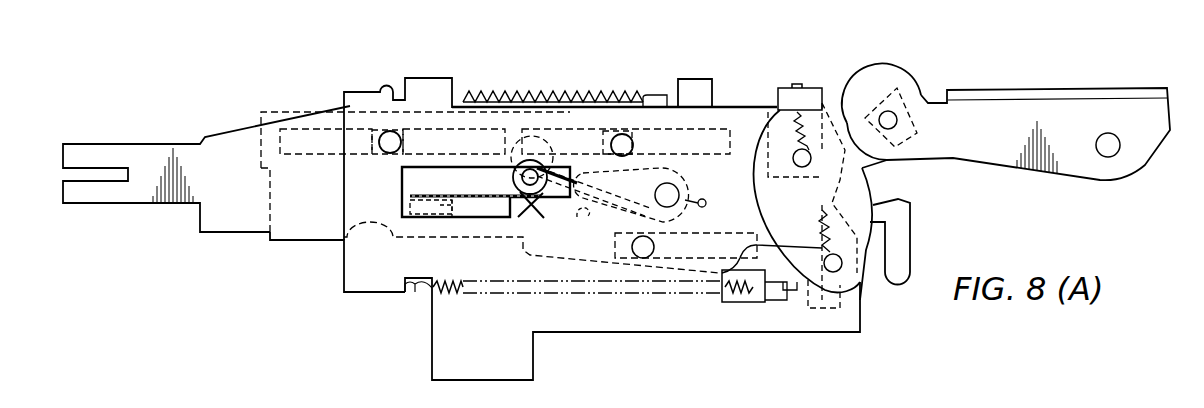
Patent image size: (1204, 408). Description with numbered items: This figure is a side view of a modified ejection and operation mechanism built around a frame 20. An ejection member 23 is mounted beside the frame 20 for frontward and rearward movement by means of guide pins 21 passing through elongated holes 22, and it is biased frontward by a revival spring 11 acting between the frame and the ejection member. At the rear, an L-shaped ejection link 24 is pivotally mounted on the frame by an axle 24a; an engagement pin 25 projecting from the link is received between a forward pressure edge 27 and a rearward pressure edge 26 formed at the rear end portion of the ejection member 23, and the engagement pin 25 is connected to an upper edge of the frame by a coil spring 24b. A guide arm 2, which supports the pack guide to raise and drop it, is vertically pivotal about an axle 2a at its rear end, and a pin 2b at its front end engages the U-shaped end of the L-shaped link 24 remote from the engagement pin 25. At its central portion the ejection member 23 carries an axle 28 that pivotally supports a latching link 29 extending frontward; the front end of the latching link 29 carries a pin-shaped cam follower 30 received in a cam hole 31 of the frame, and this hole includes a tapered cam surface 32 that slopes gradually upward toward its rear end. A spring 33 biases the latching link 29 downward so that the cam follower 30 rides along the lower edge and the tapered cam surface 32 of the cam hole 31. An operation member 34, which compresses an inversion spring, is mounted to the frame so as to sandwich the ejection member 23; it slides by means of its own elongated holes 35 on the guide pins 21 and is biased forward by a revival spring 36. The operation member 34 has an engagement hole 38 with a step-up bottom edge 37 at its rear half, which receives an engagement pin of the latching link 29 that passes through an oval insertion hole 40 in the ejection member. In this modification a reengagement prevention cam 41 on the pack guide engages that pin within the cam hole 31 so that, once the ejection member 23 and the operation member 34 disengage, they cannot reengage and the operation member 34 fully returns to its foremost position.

The guide arm 2 is at (1038, 110).
The axle 2a is at (1110, 155).
The pin 2b is at (893, 119).
The revival spring 11 is at (487, 288).
The frame 20 is at (585, 318).
The guide pins 21 is at (383, 136).
The elongated holes 22 is at (458, 137).
The ejection member 23 is at (113, 152).
The L-shaped ejection link 24 is at (857, 208).
The axle 24a is at (810, 152).
The coil spring 24b is at (779, 108).
The engagement pin 25 is at (843, 268).
The rearward pressure edge 26 is at (807, 282).
The forward pressure edge 27 is at (903, 250).
The axle 28 is at (672, 197).
The latching link 29 is at (587, 213).
The cam follower 30 is at (531, 170).
The cam hole 31 is at (405, 192).
The tapered cam surface 32 is at (517, 208).
The spring 33 is at (617, 200).
The operation member 34 is at (289, 240).
The elongated holes 35 is at (295, 135).
The revival spring 36 is at (503, 92).
The step-up bottom edge 37 is at (450, 207).
The engagement hole 38 is at (425, 177).
The oval insertion hole 40 is at (551, 147).
The reengagement prevention cam 41 is at (478, 203).